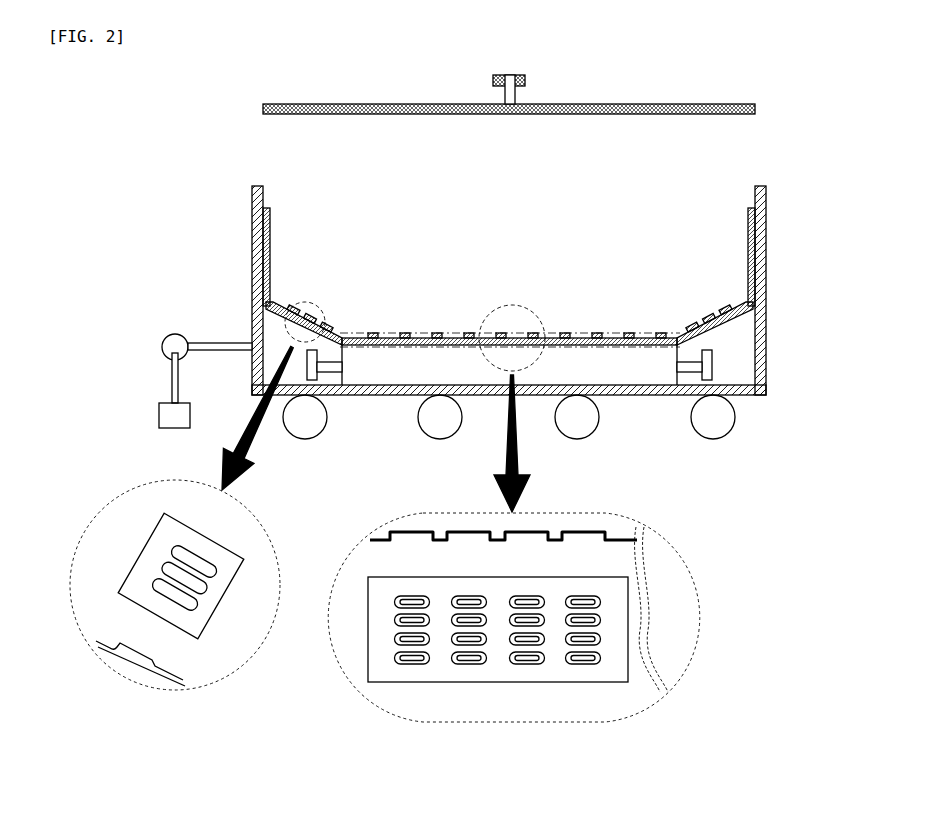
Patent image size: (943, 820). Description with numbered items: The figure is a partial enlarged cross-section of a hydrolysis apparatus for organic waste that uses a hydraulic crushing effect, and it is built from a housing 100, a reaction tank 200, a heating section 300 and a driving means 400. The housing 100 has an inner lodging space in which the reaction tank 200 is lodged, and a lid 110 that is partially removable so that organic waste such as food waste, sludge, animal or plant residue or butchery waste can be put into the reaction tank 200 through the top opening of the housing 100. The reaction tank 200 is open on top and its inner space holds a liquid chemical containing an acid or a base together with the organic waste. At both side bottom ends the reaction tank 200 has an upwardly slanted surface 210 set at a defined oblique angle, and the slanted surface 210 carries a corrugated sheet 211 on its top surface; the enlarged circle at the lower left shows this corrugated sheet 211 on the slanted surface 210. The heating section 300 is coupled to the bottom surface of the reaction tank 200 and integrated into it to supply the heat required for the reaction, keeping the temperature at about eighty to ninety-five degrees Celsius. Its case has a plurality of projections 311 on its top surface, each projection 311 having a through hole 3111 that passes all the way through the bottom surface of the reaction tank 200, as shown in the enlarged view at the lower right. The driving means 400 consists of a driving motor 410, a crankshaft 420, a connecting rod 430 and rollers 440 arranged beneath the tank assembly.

The housing 100 is at (252, 227).
The lid 110 is at (263, 110).
The reaction tank 200 is at (266, 258).
The slanted surface 210 is at (263, 330).
The corrugated sheet 211 is at (312, 314).
The heating section 300 is at (724, 369).
The projection 311 is at (592, 333).
The through hole 3111 is at (452, 333).
The driving means 400 is at (151, 352).
The driving motor 410 is at (160, 416).
The crankshaft 420 is at (165, 338).
The connecting rod 430 is at (220, 352).
The rollers 440 is at (716, 428).